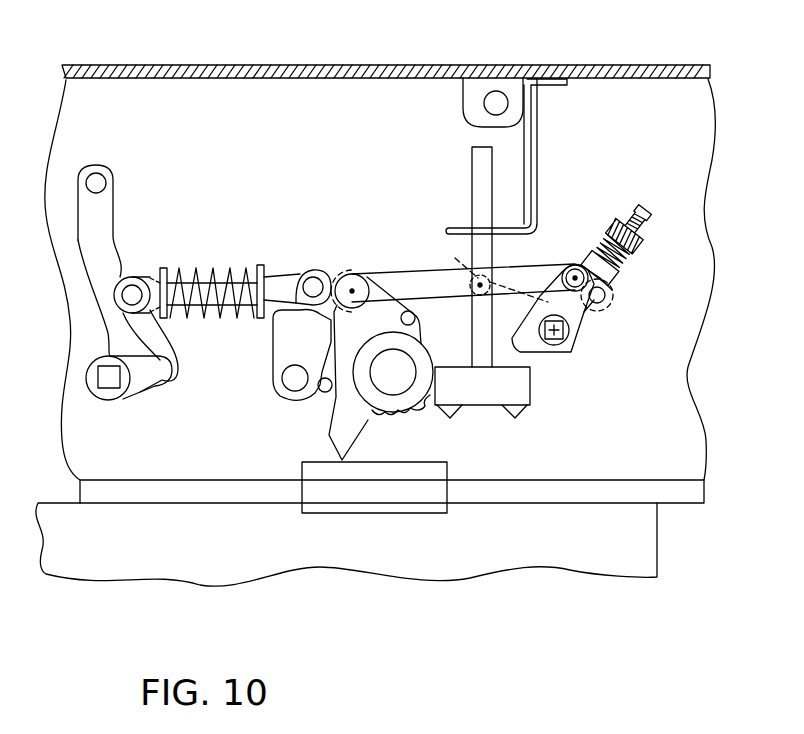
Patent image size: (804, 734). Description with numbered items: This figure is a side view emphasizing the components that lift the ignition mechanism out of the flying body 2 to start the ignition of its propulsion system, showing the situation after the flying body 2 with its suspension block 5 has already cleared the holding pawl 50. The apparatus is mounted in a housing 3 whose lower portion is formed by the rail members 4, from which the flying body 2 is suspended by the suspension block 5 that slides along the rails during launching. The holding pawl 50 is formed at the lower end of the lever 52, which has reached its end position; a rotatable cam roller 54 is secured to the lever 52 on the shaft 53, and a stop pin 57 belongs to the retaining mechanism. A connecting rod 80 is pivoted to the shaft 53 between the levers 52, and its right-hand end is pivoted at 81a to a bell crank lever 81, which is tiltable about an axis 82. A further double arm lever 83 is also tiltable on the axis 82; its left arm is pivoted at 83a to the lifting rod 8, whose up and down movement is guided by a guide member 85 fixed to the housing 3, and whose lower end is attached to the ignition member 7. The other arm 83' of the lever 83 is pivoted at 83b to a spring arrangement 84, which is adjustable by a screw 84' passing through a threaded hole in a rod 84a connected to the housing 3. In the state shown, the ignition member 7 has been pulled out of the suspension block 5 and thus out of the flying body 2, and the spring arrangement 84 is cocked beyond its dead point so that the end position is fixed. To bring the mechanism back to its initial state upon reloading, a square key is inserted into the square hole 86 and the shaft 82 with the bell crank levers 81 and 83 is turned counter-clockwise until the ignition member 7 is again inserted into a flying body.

The flying body 2 is at (510, 553).
The housing 3 is at (388, 64).
The rail member 4 is at (672, 493).
The suspension block 5 is at (386, 472).
The ignition member 7 is at (485, 392).
The lifting rod 8 is at (480, 180).
The holding pawl 50 is at (338, 440).
The lever 52 is at (340, 343).
The shaft 53 is at (352, 290).
The cam roller 54 is at (343, 272).
The stop pin 57 is at (322, 392).
The connecting rod 80 is at (418, 288).
The bell crank lever 81 is at (563, 270).
The pivot 81a is at (582, 266).
The axis 82 is at (565, 340).
The bell crank lever 83 is at (553, 289).
The arm 83' is at (624, 333).
The pivot 83a is at (481, 271).
The pivot 83b is at (613, 305).
The spring arrangement 84 is at (626, 280).
The screw 84' is at (641, 201).
The rod 84a is at (642, 241).
The guide member 85 is at (460, 227).
The square hole 86 is at (555, 345).